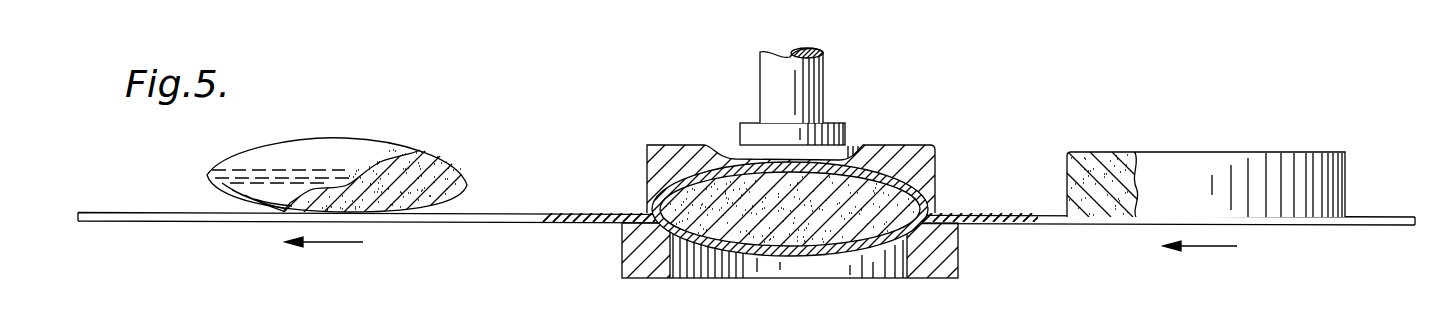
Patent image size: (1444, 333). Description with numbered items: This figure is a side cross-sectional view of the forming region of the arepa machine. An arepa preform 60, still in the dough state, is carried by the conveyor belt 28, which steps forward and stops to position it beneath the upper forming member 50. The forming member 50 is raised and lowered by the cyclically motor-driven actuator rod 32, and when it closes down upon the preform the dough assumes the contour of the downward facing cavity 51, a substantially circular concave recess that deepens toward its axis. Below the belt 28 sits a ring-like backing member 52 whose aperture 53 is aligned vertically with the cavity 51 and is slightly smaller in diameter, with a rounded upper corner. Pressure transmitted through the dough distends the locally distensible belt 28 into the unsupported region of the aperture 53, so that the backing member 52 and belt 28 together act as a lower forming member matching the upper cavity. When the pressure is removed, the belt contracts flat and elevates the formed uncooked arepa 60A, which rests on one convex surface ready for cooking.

The conveyor belt 28 is at (1062, 225).
The actuator rod 32 is at (810, 82).
The upper forming member 50 is at (900, 158).
The cavity 51 is at (907, 178).
The backing member 52 is at (937, 257).
The aperture 53 is at (870, 270).
The arepa preform 60 is at (1193, 172).
The formed uncooked arepa 60A is at (740, 250).